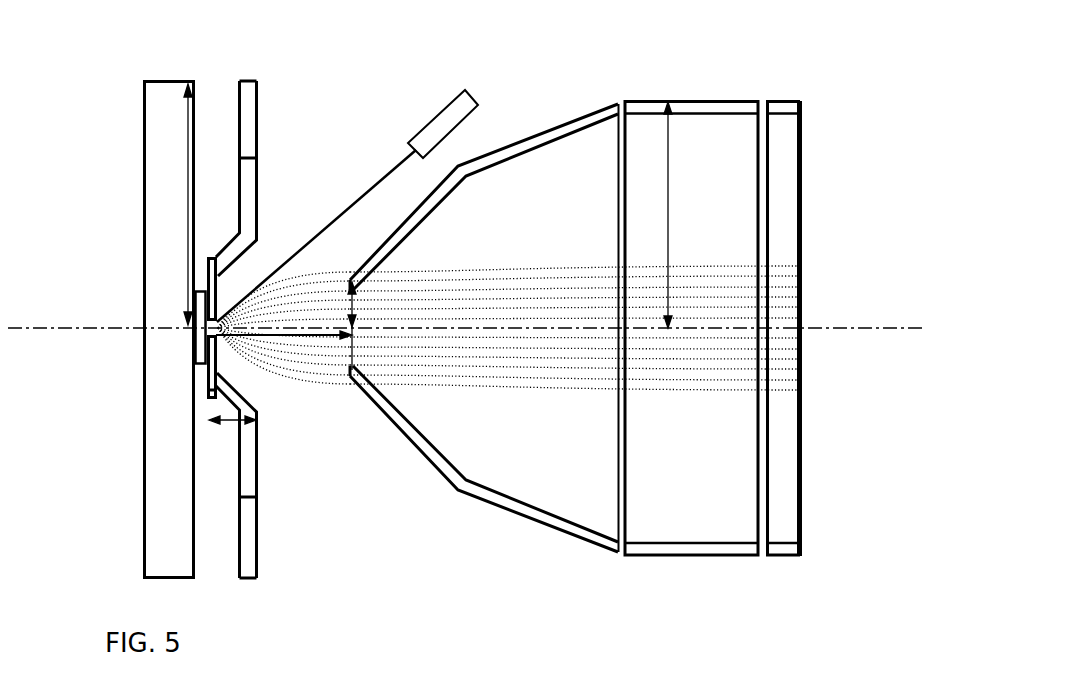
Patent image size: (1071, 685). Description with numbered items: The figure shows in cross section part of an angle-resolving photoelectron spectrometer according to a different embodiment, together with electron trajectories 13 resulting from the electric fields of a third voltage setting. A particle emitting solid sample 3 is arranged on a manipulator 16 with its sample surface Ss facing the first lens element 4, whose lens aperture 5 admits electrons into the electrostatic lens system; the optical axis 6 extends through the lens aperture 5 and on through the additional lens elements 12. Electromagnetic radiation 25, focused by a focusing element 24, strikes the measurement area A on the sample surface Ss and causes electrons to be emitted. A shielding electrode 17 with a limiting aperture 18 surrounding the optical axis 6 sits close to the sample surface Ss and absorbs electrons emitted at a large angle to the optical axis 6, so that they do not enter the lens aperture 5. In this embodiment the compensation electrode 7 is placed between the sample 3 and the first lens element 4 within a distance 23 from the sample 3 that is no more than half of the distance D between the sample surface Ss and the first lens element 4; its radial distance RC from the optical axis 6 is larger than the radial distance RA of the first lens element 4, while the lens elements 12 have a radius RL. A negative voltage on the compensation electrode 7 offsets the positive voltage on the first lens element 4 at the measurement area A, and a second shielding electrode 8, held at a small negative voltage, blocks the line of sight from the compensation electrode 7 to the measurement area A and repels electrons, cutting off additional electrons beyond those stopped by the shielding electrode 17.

The particle emitting solid sample 3 is at (207, 358).
The first lens element 4 is at (511, 327).
The lens aperture 5 is at (390, 300).
The optical axis 6 is at (880, 328).
The compensation electrode 7 is at (248, 102).
The second shielding electrode 8 is at (250, 468).
The additional lens elements 12 is at (795, 108).
The beam envelope 13 is at (517, 353).
The manipulator 16 is at (168, 112).
The shielding electrode 17 is at (208, 393).
The limiting aperture 18 is at (200, 330).
The distance 23 is at (215, 421).
The focusing element 24 is at (430, 128).
The electromagnetic radiation 25 is at (333, 216).
The measurement area A is at (213, 325).
The distance D is at (320, 337).
The sample surface Ss is at (240, 352).
The distance from the compensation electrode to the optical axis RC is at (192, 163).
The distance between the first lens element and the optical axis RA is at (473, 311).
The lens radius RL is at (669, 245).